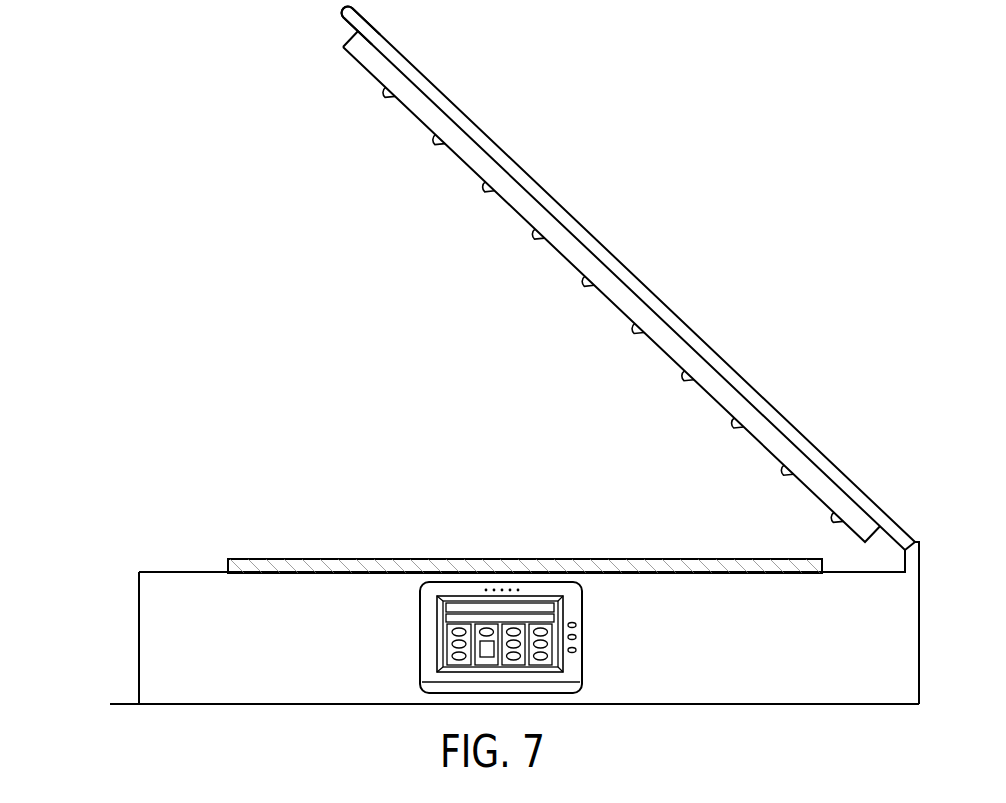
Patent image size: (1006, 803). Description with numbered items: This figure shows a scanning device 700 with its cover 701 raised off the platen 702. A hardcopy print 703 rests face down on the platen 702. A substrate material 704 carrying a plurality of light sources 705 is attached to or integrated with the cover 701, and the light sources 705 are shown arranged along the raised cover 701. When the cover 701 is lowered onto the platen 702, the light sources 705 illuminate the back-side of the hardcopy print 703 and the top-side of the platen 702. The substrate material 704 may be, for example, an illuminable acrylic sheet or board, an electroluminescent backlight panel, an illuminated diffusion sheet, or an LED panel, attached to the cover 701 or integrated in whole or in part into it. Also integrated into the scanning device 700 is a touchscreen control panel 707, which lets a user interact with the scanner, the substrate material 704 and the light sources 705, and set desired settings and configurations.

The scanning device 700 is at (908, 688).
The cover 701 is at (732, 369).
The platen 702 is at (883, 574).
The hardcopy print 703 is at (258, 575).
The substrate material 704 is at (343, 47).
The plurality of light sources 705 is at (534, 237).
The touchscreen control panel 707 is at (581, 690).